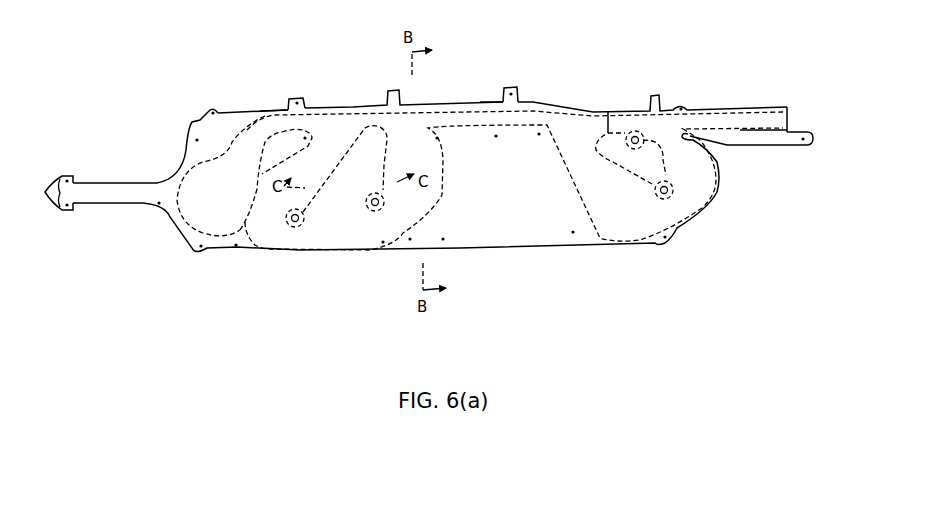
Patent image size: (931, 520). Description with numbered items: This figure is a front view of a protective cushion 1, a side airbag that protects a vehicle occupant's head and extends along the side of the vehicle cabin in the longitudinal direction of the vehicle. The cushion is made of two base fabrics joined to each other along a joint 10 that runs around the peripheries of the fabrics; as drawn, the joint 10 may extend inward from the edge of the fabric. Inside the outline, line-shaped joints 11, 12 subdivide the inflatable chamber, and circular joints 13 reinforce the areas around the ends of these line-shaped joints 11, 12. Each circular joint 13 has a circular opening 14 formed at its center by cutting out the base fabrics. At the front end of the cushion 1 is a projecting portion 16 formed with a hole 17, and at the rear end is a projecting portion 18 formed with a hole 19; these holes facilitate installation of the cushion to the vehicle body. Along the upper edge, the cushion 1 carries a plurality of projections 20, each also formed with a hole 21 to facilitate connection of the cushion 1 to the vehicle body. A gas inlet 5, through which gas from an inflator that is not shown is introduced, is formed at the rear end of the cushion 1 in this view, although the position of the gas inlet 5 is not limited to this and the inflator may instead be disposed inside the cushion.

The protective cushion 1 is at (665, 80).
The gas inlet 5 is at (793, 107).
The joint 10 is at (180, 215).
The joint 11 is at (327, 178).
The joint 12 is at (608, 112).
The circular joint 13 is at (285, 217).
The circular opening 14 is at (367, 202).
The projecting portion 16 is at (97, 192).
The hole 17 is at (45, 193).
The projecting portion 18 is at (783, 145).
The hole 19 is at (804, 145).
The projection 20 is at (289, 100).
The hole 21 is at (210, 112).